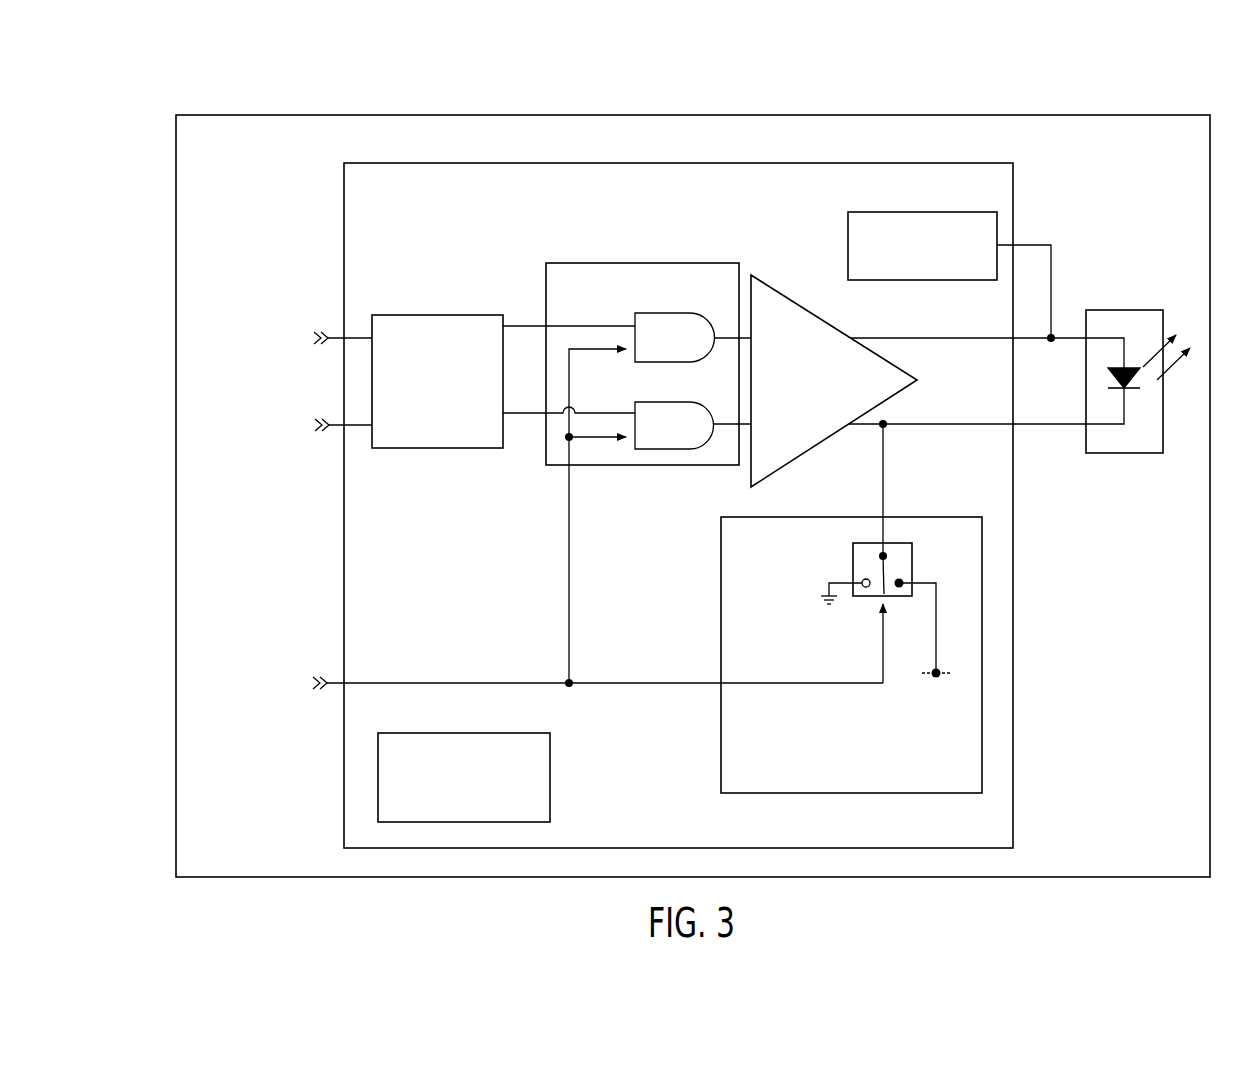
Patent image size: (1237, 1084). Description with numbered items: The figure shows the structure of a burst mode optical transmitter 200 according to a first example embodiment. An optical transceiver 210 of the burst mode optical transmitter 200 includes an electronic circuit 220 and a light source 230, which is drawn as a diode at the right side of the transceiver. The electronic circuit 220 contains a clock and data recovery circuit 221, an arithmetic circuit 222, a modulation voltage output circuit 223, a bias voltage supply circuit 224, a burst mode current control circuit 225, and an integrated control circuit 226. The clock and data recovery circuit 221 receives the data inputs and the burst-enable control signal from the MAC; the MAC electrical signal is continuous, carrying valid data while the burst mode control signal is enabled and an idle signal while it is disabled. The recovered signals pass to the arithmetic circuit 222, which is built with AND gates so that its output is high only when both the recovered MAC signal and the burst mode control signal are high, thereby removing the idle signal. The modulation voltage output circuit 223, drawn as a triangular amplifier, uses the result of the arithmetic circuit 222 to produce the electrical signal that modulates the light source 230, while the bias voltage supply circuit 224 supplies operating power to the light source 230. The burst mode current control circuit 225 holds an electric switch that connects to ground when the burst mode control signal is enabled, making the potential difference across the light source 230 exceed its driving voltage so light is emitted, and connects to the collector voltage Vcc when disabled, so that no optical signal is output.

The burst mode optical transmitter 200 is at (1168, 96).
The optical transceiver 210 is at (706, 115).
The electronic circuit 220 is at (691, 163).
The clock and data recovery circuit 221 is at (441, 315).
The arithmetic circuit 222 is at (644, 263).
The modulation voltage output circuit 223 is at (813, 319).
The bias voltage supply circuit 224 is at (923, 212).
The burst mode current control circuit 225 is at (851, 655).
The integrated control circuit 226 is at (477, 733).
The light source 230 is at (1127, 310).